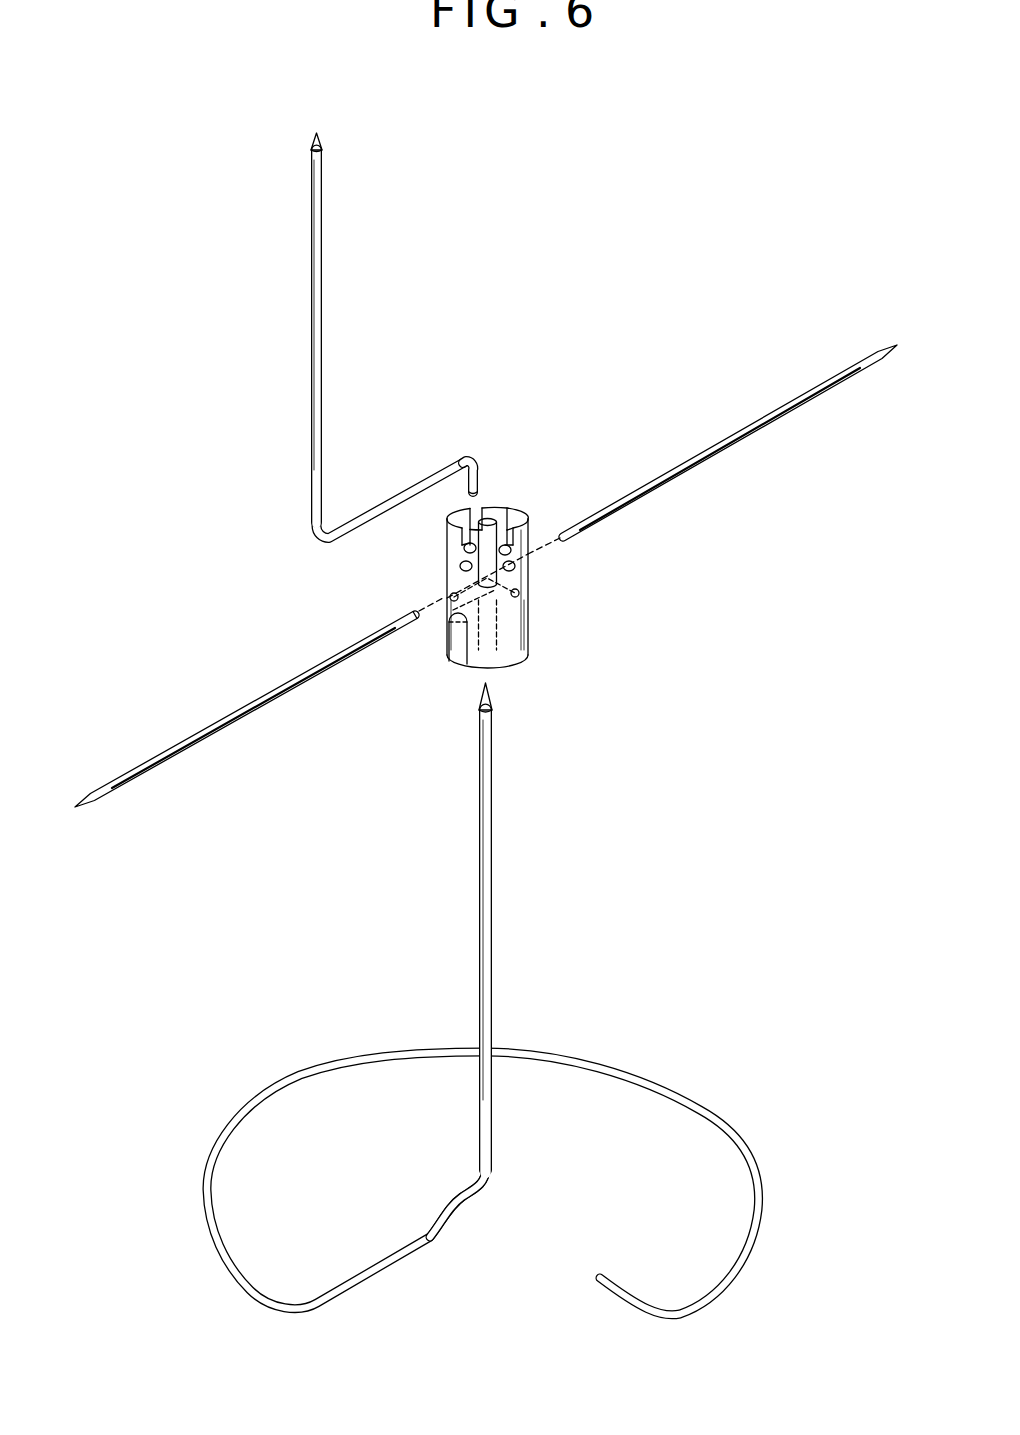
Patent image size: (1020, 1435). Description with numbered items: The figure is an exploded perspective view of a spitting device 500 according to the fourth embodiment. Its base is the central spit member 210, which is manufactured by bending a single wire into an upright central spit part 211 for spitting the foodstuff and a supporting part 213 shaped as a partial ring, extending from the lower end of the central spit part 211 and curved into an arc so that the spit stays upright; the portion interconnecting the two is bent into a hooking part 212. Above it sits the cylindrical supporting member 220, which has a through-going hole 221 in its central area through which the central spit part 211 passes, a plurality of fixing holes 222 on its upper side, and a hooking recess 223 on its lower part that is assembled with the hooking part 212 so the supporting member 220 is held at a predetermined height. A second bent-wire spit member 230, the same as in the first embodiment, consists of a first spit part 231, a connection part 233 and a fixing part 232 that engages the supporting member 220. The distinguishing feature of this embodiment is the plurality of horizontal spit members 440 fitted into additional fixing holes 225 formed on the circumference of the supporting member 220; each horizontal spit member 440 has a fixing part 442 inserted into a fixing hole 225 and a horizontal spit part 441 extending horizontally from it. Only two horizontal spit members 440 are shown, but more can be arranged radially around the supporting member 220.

The spitting device 500 is at (763, 246).
The central spit member 210 is at (628, 999).
The central spit part 211 is at (493, 806).
The hooking part 212 is at (462, 1208).
The supporting part 213 is at (730, 1131).
The supporting member 220 is at (600, 655).
The through-going hole 221 is at (517, 520).
The fixing holes 222 is at (507, 536).
The hooking recess 223 is at (500, 665).
The additional fixing holes 225 is at (520, 596).
The spit member 230 is at (388, 232).
The first spit part 231 is at (312, 228).
The fixing part 232 is at (478, 476).
The connection part 233 is at (383, 504).
The horizontal spit members 440 is at (792, 381).
The horizontal spit part 441 is at (780, 417).
The fixing part 442 is at (401, 620).